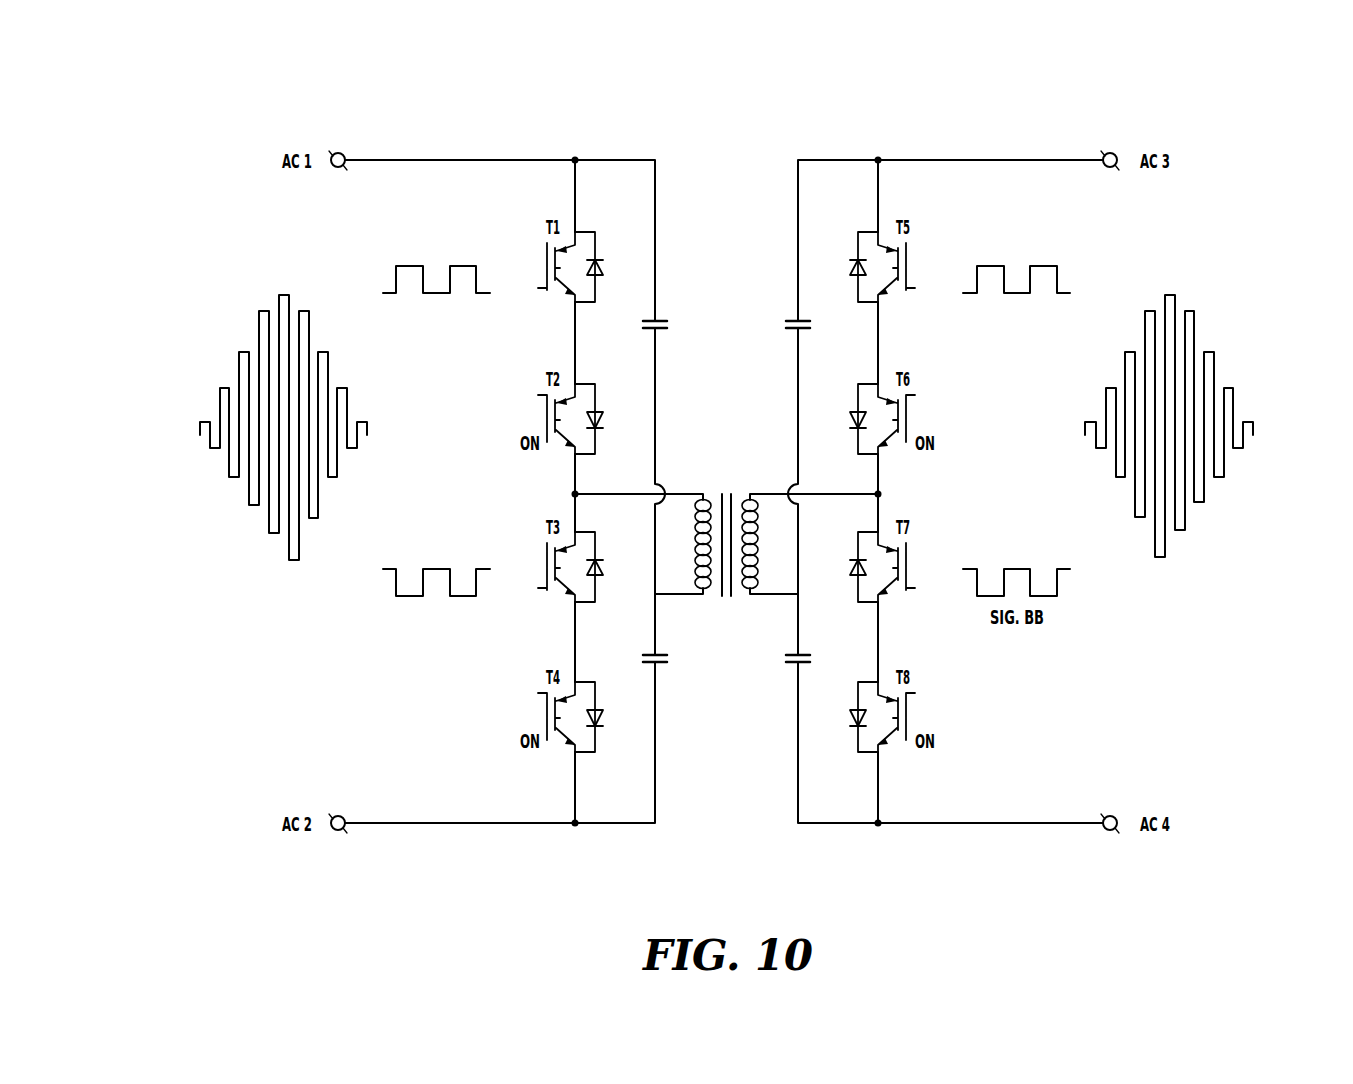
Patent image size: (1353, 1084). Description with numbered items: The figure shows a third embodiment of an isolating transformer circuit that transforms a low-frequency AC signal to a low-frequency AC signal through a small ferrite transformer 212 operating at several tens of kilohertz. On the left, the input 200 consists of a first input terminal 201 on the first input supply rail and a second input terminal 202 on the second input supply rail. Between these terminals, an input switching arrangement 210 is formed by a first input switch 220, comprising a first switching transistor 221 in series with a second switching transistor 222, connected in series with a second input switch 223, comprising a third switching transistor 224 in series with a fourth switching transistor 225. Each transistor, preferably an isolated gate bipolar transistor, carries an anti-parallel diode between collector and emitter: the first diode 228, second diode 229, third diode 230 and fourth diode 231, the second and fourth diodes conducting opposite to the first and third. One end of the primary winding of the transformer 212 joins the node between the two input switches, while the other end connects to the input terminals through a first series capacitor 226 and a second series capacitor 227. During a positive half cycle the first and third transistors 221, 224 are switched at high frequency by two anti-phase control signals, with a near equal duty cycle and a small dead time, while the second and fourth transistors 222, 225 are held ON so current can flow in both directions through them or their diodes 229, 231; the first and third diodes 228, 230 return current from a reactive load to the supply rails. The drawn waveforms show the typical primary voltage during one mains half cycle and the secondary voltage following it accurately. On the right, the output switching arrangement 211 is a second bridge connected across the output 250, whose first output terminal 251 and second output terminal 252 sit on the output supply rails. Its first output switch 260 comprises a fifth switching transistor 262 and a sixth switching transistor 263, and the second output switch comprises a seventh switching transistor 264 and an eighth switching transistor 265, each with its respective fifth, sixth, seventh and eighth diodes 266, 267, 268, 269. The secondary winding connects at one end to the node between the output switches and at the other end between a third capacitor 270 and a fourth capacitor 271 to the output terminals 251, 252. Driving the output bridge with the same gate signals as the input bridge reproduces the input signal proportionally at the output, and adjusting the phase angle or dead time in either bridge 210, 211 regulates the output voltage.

The input 200 is at (216, 357).
The first input terminal 201 is at (340, 153).
The second input terminal 202 is at (339, 831).
The input switching arrangement 210 is at (444, 835).
The output switching arrangement 211 is at (1009, 835).
The transformer 212 is at (727, 716).
The first switching leg with SIG. A 220 is at (407, 387).
The first switching transistor 221 is at (543, 267).
The second switching transistor 222 is at (543, 419).
The second input switch 223 is at (407, 681).
The third switching transistor 224 is at (543, 567).
The fourth switching transistor 225 is at (543, 717).
The first series capacitor 226 is at (669, 310).
The second series capacitor 227 is at (669, 673).
The first parallel diode 228 is at (604, 267).
The second diode 229 is at (604, 419).
The third diode 230 is at (604, 567).
The fourth diode 231 is at (604, 717).
The output 250 is at (1241, 357).
The first output terminal 251 is at (1110, 153).
The second output terminal 252 is at (1109, 831).
The first output switch 260 is at (990, 387).
The fifth switching transistor 262 is at (909, 267).
The sixth switching transistor 263 is at (909, 419).
The seventh switching transistor 264 is at (909, 567).
The eighth switching transistor 265 is at (909, 717).
The fifth diode 266 is at (849, 267).
The sixth diode 267 is at (849, 419).
The seventh diode 268 is at (849, 567).
The eighth diode 269 is at (849, 717).
The third capacitor 270 is at (783, 310).
The fourth capacitor 271 is at (783, 673).